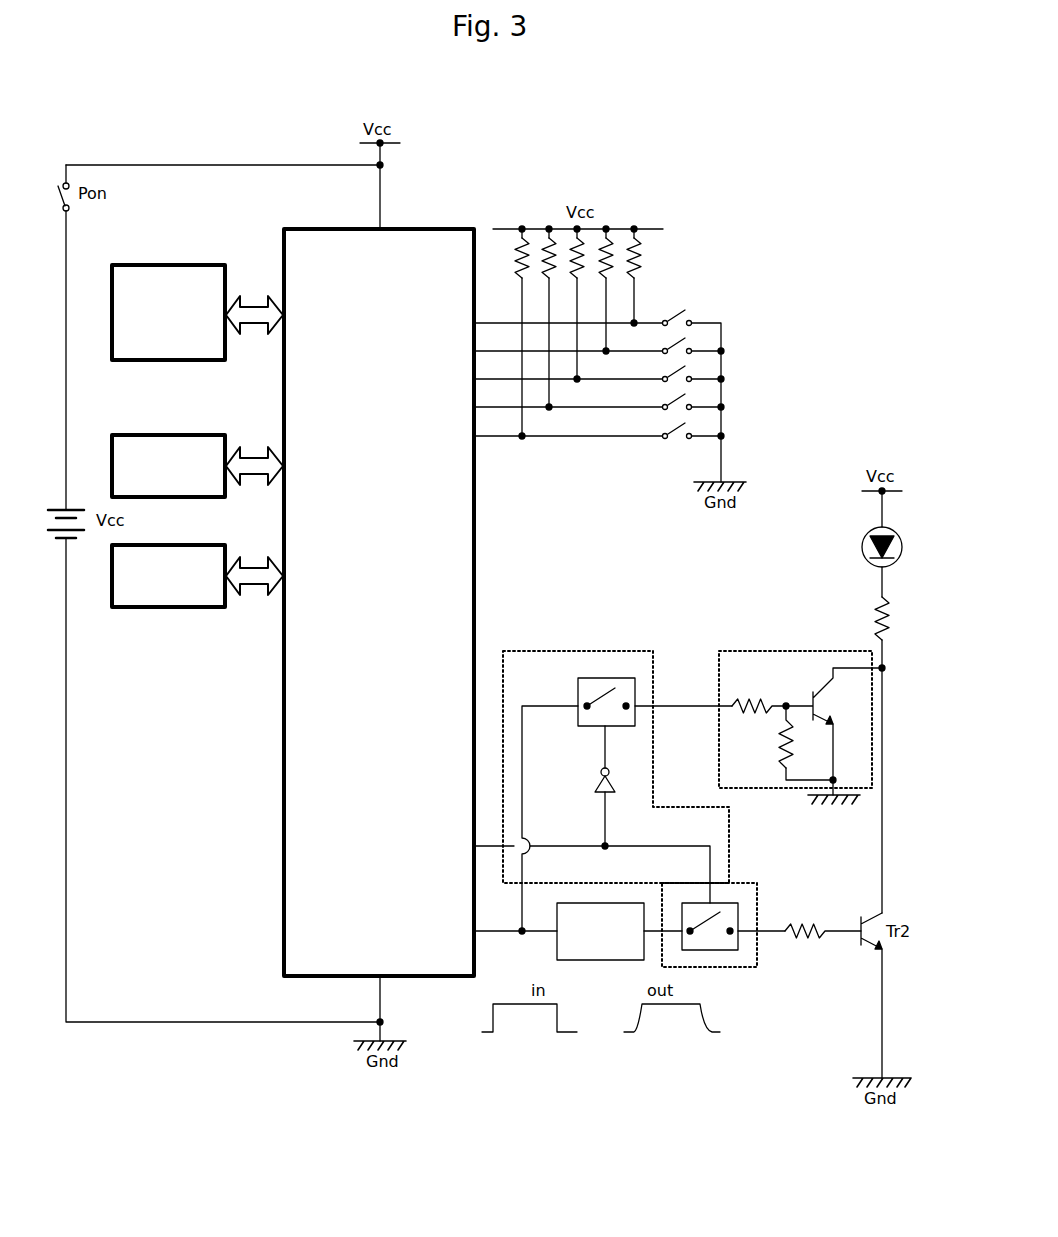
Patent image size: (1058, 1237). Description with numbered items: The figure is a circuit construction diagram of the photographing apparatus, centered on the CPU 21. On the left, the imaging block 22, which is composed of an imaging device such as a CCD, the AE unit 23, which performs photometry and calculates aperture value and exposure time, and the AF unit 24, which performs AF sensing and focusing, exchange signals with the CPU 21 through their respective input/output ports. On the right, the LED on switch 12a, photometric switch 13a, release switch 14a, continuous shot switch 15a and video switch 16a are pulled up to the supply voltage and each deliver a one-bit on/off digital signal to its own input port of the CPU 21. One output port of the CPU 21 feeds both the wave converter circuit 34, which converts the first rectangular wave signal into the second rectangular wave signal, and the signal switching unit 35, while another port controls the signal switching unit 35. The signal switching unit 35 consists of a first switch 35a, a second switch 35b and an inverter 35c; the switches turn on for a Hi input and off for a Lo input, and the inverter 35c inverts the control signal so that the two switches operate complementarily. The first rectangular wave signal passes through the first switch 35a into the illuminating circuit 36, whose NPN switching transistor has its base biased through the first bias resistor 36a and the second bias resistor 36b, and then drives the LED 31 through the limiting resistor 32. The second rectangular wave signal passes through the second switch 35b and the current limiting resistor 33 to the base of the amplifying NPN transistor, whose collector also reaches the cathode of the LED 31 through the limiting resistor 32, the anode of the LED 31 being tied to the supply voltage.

The CPU 21 is at (478, 226).
The imaging block 22 is at (222, 262).
The AE unit 23 is at (222, 432).
The AF unit 24 is at (222, 542).
The LED on switch 12a is at (690, 316).
The photometric switch 13a is at (690, 344).
The release switch 14a is at (690, 372).
The continuous shot switch 15a is at (690, 400).
The video switch 16a is at (690, 429).
The LED 31 is at (860, 535).
The limiting resistor 32 is at (874, 600).
The current limiting resistor 33 is at (814, 918).
The wave converter circuit 34 is at (556, 918).
The signal switching unit 35 is at (530, 650).
The first switch 35a is at (574, 690).
The second switch 35b is at (700, 902).
The inverter 35c is at (598, 778).
The illuminating circuit 36 is at (758, 723).
The first bias resistor 36a is at (760, 698).
The second bias resistor 36b is at (778, 756).